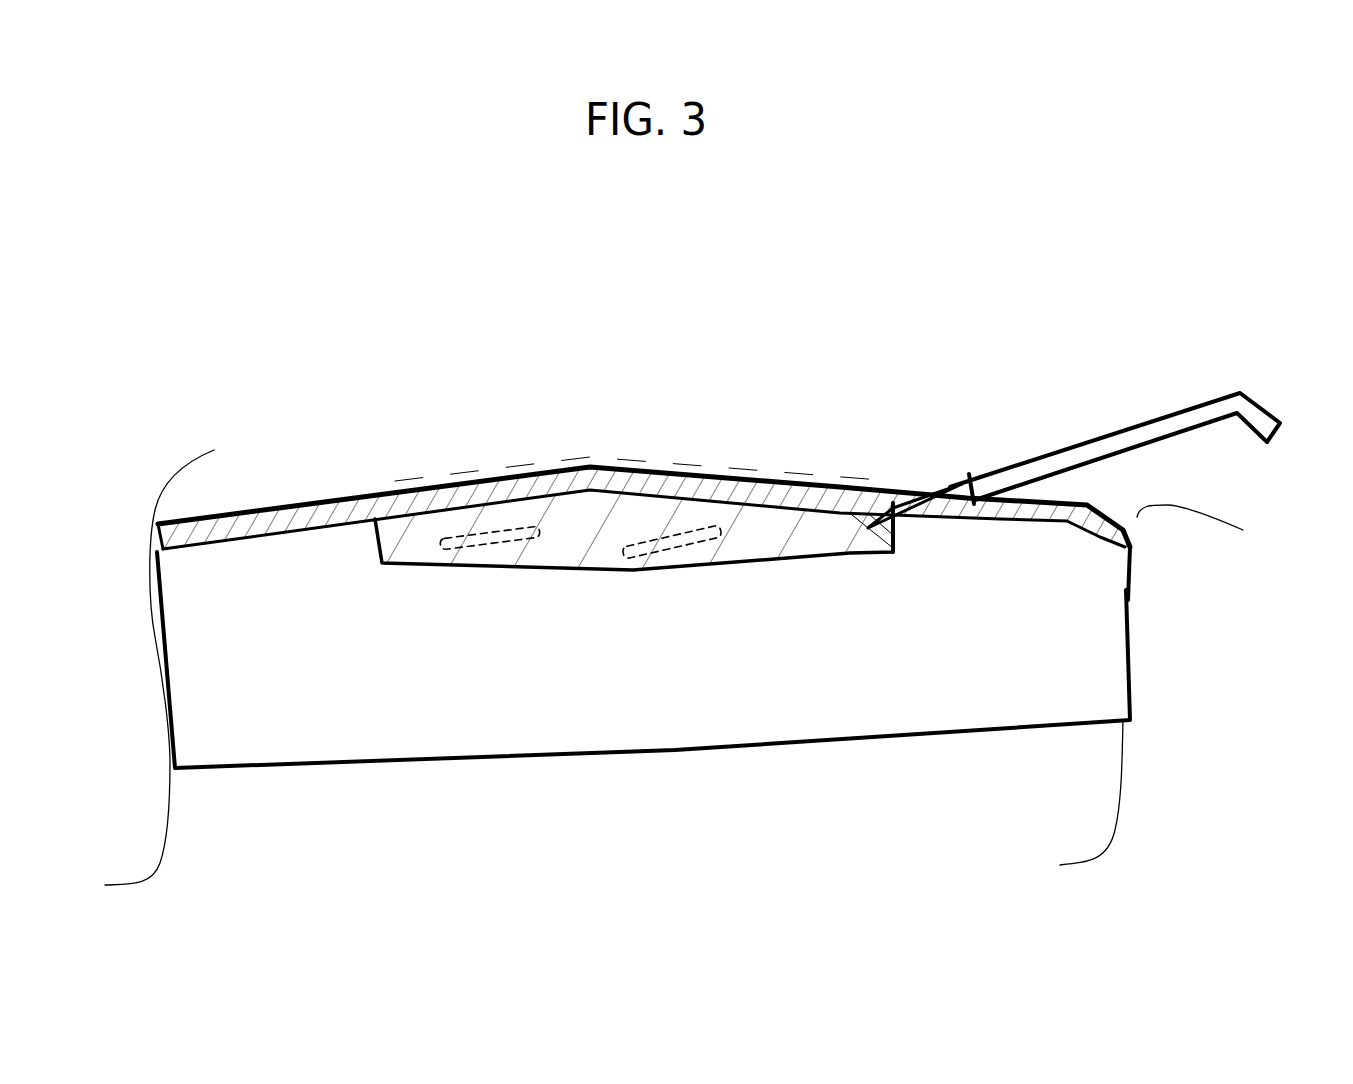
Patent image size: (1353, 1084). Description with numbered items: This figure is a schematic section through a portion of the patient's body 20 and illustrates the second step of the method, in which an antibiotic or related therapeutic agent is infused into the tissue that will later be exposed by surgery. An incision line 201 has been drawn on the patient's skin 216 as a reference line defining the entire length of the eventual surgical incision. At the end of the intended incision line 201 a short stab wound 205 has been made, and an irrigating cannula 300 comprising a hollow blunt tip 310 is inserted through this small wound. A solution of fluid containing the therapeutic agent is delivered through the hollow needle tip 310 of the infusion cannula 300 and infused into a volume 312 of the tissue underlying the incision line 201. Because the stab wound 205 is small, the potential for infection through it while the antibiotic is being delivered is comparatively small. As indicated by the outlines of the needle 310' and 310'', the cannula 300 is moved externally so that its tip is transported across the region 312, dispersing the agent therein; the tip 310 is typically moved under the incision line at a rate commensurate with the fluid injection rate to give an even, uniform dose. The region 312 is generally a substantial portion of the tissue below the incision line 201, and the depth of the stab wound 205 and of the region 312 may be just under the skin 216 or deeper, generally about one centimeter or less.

The patient's body 20 is at (345, 458).
The incision line 201 is at (645, 470).
The short stab wound 205 is at (845, 465).
The skin 216 is at (1130, 512).
The irrigating cannula 300 is at (1073, 395).
The hollow blunt tip 310 is at (692, 425).
The needle outline 310' is at (742, 610).
The needle outline 310'' is at (541, 620).
The volume of tissue 312 is at (630, 570).